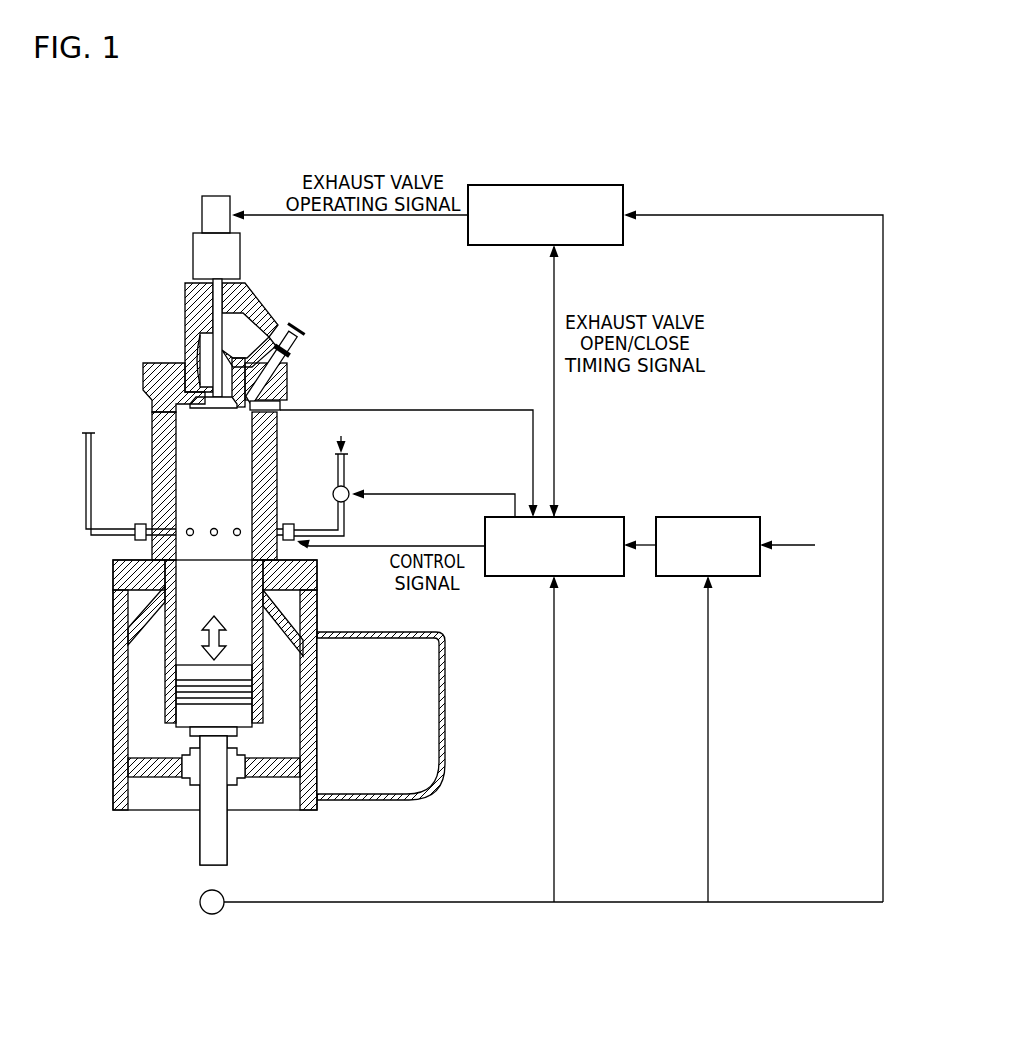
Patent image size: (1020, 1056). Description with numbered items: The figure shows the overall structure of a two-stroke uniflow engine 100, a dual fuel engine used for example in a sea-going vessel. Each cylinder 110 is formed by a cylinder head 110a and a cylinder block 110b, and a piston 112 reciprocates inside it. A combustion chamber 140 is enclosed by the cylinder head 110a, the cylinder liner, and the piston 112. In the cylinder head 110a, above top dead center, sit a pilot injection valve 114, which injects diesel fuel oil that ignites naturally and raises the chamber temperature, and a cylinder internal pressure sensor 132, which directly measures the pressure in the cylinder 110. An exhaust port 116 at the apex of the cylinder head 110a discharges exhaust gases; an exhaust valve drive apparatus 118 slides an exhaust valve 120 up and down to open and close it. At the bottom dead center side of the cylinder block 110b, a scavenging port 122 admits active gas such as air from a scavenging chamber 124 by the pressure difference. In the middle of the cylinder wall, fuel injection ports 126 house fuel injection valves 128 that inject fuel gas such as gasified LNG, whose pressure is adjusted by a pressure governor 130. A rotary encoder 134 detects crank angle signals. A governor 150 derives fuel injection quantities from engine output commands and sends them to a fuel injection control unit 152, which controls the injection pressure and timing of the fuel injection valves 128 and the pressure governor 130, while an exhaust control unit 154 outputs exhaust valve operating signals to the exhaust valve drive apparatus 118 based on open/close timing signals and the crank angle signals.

The two-stroke uniflow engine 100 is at (206, 166).
The cylinder 110 is at (78, 368).
The cylinder head 110a is at (150, 386).
The cylinder block 110b is at (164, 433).
The piston 112 is at (193, 716).
The pilot injection valve 114 is at (296, 361).
The exhaust port 116 is at (196, 358).
The exhaust valve drive apparatus 118 is at (215, 258).
The exhaust valve 120 is at (227, 407).
The scavenging port 122 is at (165, 657).
The scavenging chamber 124 is at (311, 709).
The fuel injection ports 126 is at (236, 537).
The fuel injection valves 128 is at (138, 526).
The pressure governor 130 is at (357, 468).
The cylinder internal pressure sensor 132 is at (290, 406).
The rotary encoder 134 is at (222, 892).
The combustion chamber 140 is at (238, 450).
The governor 150 is at (723, 515).
The fuel injection control unit 152 is at (596, 578).
The exhaust control unit 154 is at (578, 185).